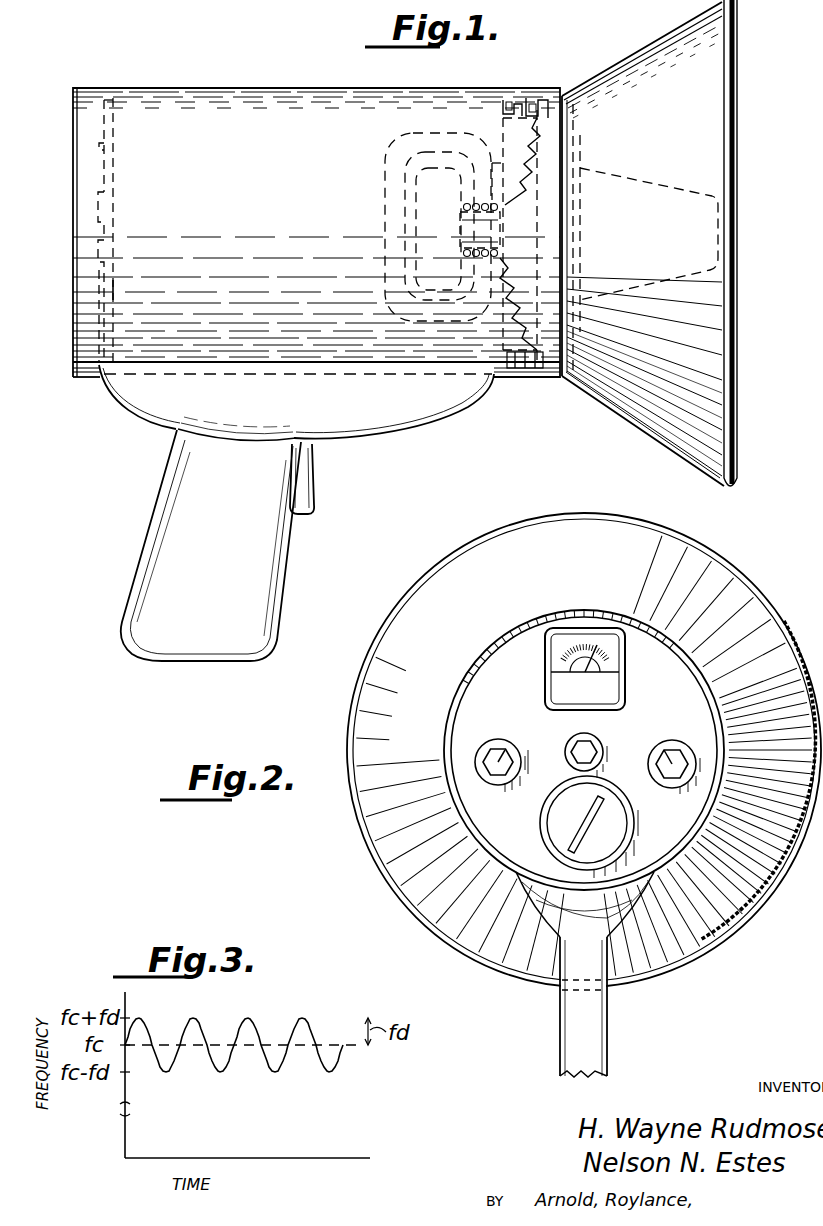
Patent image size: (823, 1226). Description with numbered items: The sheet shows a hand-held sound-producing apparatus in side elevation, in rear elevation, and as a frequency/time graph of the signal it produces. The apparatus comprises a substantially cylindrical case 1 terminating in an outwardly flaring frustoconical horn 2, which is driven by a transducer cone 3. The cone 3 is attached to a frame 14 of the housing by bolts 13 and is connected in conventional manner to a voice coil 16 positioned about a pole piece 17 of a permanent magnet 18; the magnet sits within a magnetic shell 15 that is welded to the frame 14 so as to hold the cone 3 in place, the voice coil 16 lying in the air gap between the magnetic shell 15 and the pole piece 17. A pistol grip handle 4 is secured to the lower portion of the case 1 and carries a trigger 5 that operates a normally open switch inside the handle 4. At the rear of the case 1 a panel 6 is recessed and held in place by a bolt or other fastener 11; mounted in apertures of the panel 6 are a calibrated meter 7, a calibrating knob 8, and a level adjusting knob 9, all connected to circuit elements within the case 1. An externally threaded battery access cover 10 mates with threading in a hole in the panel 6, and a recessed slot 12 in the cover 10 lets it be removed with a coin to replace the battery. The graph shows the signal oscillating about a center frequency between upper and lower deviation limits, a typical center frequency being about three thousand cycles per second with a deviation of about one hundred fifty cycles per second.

In FIG. 1, the case 1 is at (291, 84).
In FIG. 2, the case 1 is at (524, 617).
In FIG. 1, the horn 2 is at (652, 50).
In FIG. 2, the horn 2 is at (578, 548).
In FIG. 1, the transducer cone 3 is at (517, 206).
In FIG. 1, the handle 4 is at (170, 525).
In FIG. 2, the handle 4 is at (609, 1028).
In FIG. 1, the trigger 5 is at (304, 497).
In FIG. 1, the panel 6 is at (114, 288).
In FIG. 2, the panel 6 is at (510, 672).
In FIG. 1, the calibrated meter 7 is at (104, 150).
In FIG. 2, the calibrated meter 7 is at (603, 710).
In FIG. 1, the calibrating knob 8 is at (99, 220).
In FIG. 2, the calibrating knob 8 is at (490, 766).
In FIG. 1, the level adjusting knob 9 is at (99, 264).
In FIG. 2, the level adjusting knob 9 is at (665, 784).
In FIG. 1, the battery access cover 10 is at (104, 312).
In FIG. 2, the battery access cover 10 is at (628, 848).
In FIG. 2, the bolt or other fastener 11 is at (572, 756).
In FIG. 2, the recessed slot 12 is at (586, 830).
In FIG. 1, the bolts 13 is at (545, 98).
In FIG. 1, the frame 14 is at (506, 102).
In FIG. 1, the magnetic shell 15 is at (393, 151).
In FIG. 1, the voice coil 16 is at (508, 268).
In FIG. 1, the pole piece 17 is at (470, 236).
In FIG. 1, the permanent magnet 18 is at (415, 205).